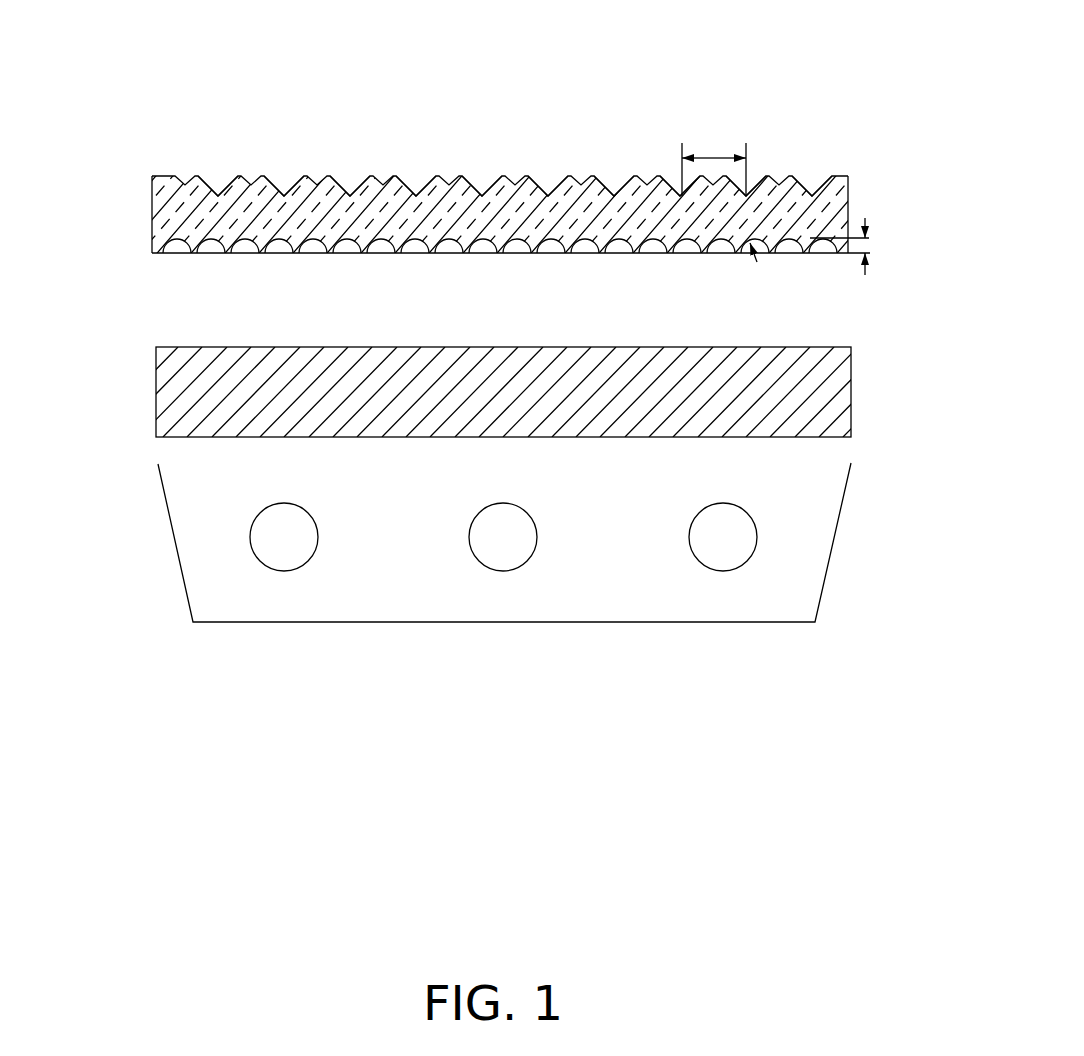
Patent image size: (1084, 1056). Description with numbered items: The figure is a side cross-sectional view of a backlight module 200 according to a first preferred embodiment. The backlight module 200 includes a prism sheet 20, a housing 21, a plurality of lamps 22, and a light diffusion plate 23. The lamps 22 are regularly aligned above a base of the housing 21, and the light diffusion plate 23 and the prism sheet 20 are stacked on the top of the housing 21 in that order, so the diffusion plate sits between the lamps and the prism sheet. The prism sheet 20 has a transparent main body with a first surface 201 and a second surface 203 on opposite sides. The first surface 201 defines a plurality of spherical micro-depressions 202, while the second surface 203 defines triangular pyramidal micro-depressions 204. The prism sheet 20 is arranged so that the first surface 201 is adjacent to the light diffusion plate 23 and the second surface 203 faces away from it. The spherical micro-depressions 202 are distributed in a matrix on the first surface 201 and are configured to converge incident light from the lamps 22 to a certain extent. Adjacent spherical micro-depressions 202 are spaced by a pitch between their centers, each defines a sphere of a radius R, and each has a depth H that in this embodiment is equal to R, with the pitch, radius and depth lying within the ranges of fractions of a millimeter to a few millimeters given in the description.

The backlight module 200 is at (708, 63).
The prism sheet 20 is at (845, 158).
The first surface 201 is at (157, 253).
The spherical micro-depressions 202 is at (383, 245).
The second surface 203 is at (173, 176).
The triangular pyramidal micro-depressions 204 is at (416, 195).
The light diffusion plate 23 is at (840, 397).
The housing 21 is at (838, 521).
The lamps 22 is at (732, 557).